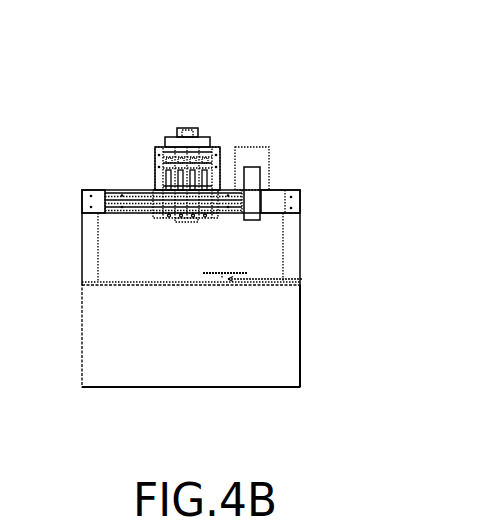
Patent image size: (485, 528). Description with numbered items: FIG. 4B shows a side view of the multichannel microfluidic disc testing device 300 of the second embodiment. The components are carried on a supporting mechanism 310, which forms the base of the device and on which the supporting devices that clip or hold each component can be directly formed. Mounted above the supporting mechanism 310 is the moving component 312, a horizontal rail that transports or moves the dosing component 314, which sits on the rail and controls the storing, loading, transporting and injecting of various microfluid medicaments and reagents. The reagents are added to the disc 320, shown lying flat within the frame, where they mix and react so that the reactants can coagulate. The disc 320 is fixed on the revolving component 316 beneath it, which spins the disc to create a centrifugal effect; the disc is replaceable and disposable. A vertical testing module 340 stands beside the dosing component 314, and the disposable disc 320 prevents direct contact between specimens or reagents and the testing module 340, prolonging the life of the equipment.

The multichannel microfluidic disc testing device 300 is at (69, 56).
The supporting mechanism 310 is at (121, 309).
The moving component 312 is at (95, 195).
The dosing component 314 is at (186, 158).
The revolving component 316 is at (300, 279).
The disc 320 is at (243, 273).
The testing module 340 is at (253, 177).